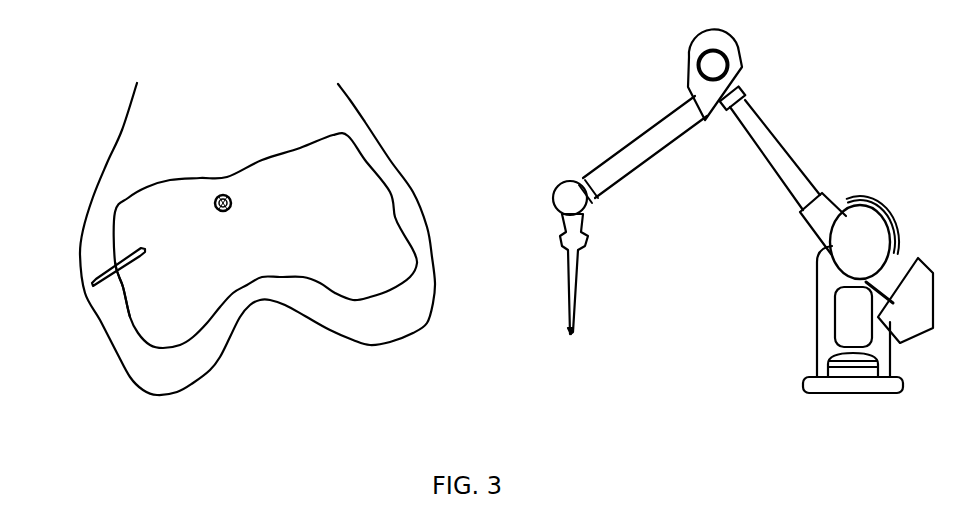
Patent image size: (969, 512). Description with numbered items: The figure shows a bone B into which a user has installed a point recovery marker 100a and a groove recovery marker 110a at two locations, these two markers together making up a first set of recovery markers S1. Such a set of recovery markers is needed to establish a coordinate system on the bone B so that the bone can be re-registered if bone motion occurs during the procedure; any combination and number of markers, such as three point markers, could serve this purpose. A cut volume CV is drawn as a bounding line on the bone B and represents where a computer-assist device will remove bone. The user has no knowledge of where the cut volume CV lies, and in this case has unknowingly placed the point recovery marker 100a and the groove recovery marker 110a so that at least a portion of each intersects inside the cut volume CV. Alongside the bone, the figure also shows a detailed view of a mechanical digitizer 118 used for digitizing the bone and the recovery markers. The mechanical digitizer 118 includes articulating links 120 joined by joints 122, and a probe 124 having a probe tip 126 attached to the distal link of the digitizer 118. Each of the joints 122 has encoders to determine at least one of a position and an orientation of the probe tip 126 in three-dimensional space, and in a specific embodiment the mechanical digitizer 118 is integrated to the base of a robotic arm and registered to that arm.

The bone B is at (268, 315).
The cut volume CV is at (130, 315).
The point recovery marker 100a is at (225, 192).
The groove recovery marker 110a is at (100, 268).
The first set of recovery markers S1 is at (245, 207).
The mechanical digitizer 118 is at (743, 211).
The articulating links 120 is at (640, 130).
The joints 122 is at (737, 58).
The probe 124 is at (580, 268).
The probe tip 126 is at (571, 336).